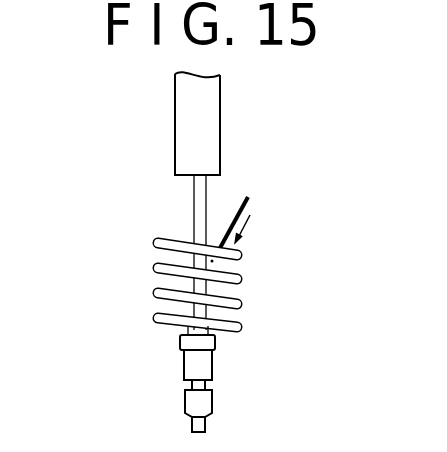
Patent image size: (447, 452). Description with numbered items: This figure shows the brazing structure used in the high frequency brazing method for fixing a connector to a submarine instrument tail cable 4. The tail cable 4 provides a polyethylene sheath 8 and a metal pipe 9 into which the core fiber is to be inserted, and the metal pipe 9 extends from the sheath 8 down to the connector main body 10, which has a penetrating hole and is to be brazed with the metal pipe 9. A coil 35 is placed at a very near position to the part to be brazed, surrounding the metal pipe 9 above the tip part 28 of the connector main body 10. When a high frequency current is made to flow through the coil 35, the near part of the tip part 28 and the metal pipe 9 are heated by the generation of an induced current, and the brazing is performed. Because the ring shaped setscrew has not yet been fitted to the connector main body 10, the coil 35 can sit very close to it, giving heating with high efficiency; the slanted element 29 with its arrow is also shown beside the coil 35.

The submarine instrument tail cable 4 is at (229, 99).
The polyethylene sheath 8 is at (188, 100).
The metal pipe 9 is at (193, 206).
The connector main body 10 is at (211, 362).
The tip part 28 is at (236, 290).
The direction indicator 29 is at (252, 198).
The coil 35 is at (237, 278).